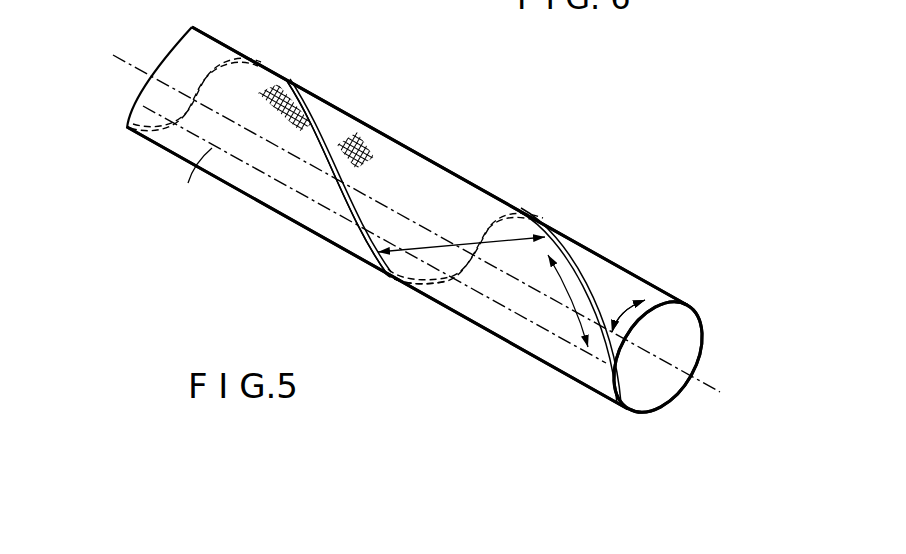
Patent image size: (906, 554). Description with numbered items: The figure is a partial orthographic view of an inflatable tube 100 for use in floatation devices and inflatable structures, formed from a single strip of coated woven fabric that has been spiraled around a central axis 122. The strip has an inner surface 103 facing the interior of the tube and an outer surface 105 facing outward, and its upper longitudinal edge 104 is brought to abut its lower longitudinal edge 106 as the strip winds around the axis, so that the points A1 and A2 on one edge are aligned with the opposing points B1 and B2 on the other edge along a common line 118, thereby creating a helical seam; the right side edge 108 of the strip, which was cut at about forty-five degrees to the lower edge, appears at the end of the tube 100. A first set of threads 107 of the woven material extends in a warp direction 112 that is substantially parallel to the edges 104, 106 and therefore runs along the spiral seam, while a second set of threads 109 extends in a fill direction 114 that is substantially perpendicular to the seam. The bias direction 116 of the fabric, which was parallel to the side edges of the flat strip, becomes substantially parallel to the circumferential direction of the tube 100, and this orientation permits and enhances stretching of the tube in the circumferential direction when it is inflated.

The inflatable tube 100 is at (597, 190).
The inner surface 103 is at (690, 346).
The upper longitudinal edge 104 is at (319, 128).
The outer surface 105 is at (437, 203).
The lower longitudinal edge 106 is at (343, 112).
The first set of threads 107 is at (263, 97).
The right side edge 108 is at (674, 397).
The second set of threads 109 is at (313, 123).
The warp direction 112 is at (545, 297).
The fill direction 114 is at (437, 248).
The bias direction 116 is at (630, 324).
The common line 118 is at (188, 183).
The central axis 122 is at (113, 55).
The point on upper edge A1 is at (607, 375).
The point on upper edge A2 is at (333, 226).
The opposing point on lower edge B1 is at (606, 369).
The opposing point on lower edge B2 is at (340, 225).